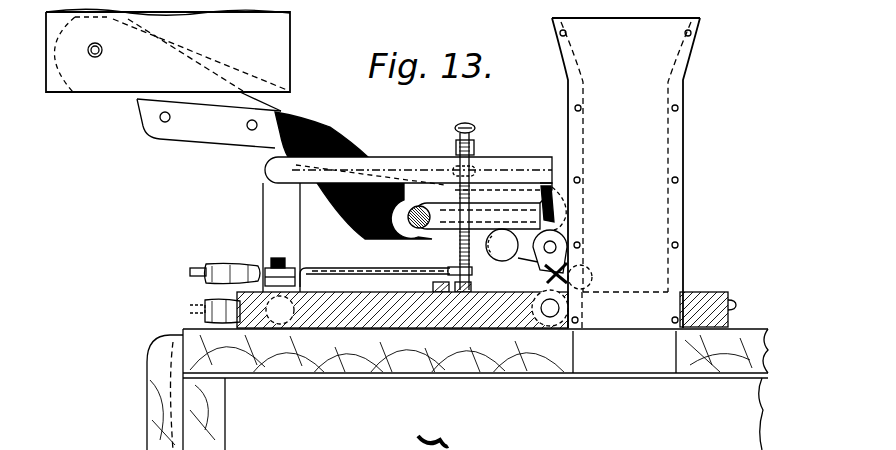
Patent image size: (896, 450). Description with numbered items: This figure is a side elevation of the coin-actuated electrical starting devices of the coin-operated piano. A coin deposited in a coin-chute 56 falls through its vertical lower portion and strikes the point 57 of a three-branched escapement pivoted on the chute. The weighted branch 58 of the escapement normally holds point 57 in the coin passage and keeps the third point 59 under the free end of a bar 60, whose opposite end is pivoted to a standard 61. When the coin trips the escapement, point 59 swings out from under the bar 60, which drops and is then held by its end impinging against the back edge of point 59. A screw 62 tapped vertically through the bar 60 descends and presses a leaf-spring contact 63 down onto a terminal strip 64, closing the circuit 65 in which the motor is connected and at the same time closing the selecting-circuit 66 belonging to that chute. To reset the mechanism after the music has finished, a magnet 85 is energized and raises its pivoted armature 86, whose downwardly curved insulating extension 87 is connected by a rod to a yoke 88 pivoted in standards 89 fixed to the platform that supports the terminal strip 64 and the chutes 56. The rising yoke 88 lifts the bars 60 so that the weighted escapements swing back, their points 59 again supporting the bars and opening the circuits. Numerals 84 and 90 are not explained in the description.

The coin-chute 56 is at (662, 228).
The escapement point 57 is at (586, 282).
The weighted branch of escapement 58 is at (523, 262).
The third point of escapement 59 is at (553, 204).
The bar 60 is at (507, 163).
The standard 61 is at (270, 217).
The screw 62 is at (473, 124).
The leaf-spring contact 63 is at (334, 268).
The terminal strip 64 is at (473, 285).
The motor circuit 65 is at (450, 449).
The selecting-circuit 66 is at (204, 264).
The pin 84 is at (204, 308).
The magnet 85 is at (285, 71).
The pivoted armature 86 is at (219, 133).
The downwardly curved extension 87 is at (331, 129).
The yoke 88 is at (498, 200).
The standards 89 is at (565, 268).
The pin 90 is at (441, 200).